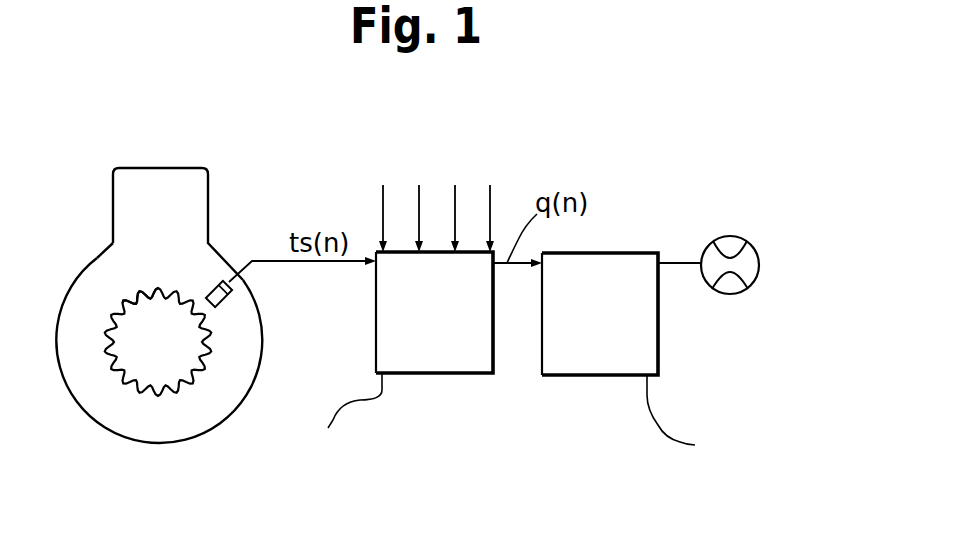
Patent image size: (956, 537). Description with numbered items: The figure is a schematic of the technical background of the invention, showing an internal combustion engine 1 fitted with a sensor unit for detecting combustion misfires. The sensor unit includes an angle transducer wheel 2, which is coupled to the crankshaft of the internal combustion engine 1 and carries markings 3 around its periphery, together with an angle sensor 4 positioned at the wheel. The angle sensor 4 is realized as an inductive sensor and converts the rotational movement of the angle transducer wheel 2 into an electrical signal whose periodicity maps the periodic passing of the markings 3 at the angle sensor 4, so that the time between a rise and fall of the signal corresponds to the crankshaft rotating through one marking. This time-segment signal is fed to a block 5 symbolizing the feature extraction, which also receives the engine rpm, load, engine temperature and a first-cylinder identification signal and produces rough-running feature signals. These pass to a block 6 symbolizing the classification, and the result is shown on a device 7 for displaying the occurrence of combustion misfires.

The internal combustion engine 1 is at (168, 188).
The angle transducer wheel 2 is at (118, 362).
The markings 3 is at (127, 300).
The angle sensor 4 is at (222, 303).
The block symbolizing the feature extraction 5 is at (438, 358).
The block symbolizing the classification 6 is at (595, 357).
The device for displaying the occurrence of combustion misfires 7 is at (727, 238).